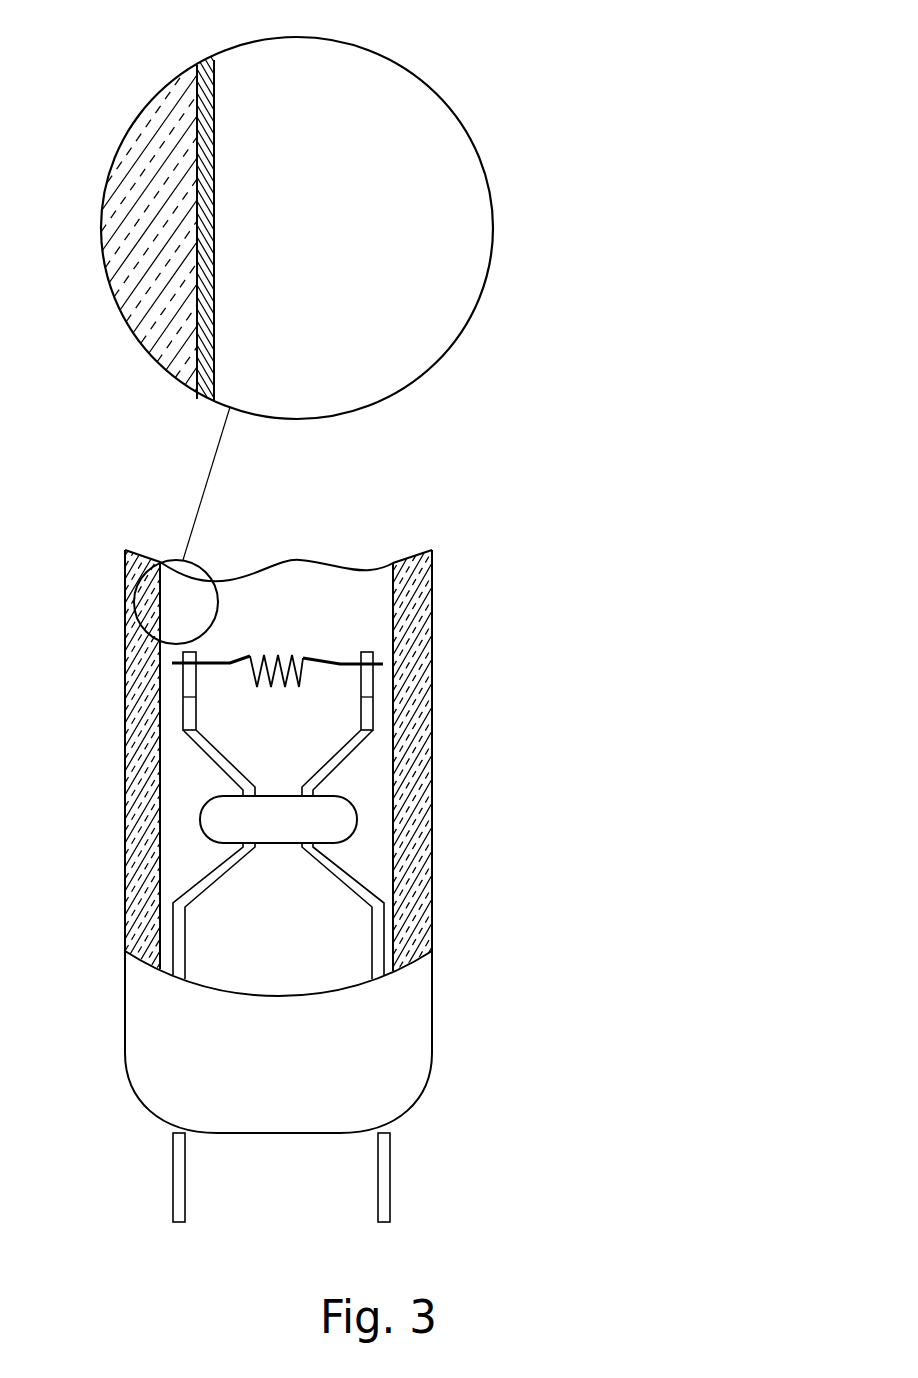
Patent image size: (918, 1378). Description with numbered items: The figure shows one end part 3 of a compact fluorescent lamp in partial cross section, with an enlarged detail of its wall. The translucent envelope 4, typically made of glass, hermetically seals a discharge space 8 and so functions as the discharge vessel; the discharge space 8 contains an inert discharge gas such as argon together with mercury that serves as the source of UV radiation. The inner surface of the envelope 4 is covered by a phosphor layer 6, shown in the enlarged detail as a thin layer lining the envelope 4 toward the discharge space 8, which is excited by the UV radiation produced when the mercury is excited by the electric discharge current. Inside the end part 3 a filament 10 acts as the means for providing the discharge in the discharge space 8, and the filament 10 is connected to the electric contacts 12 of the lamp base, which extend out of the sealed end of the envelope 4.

The end part 3 is at (530, 997).
The envelope 4 is at (168, 232).
The phosphor layer 6 is at (215, 325).
The discharge space 8 is at (398, 260).
The filament 10 is at (303, 657).
The electric contact 12 is at (180, 1148).